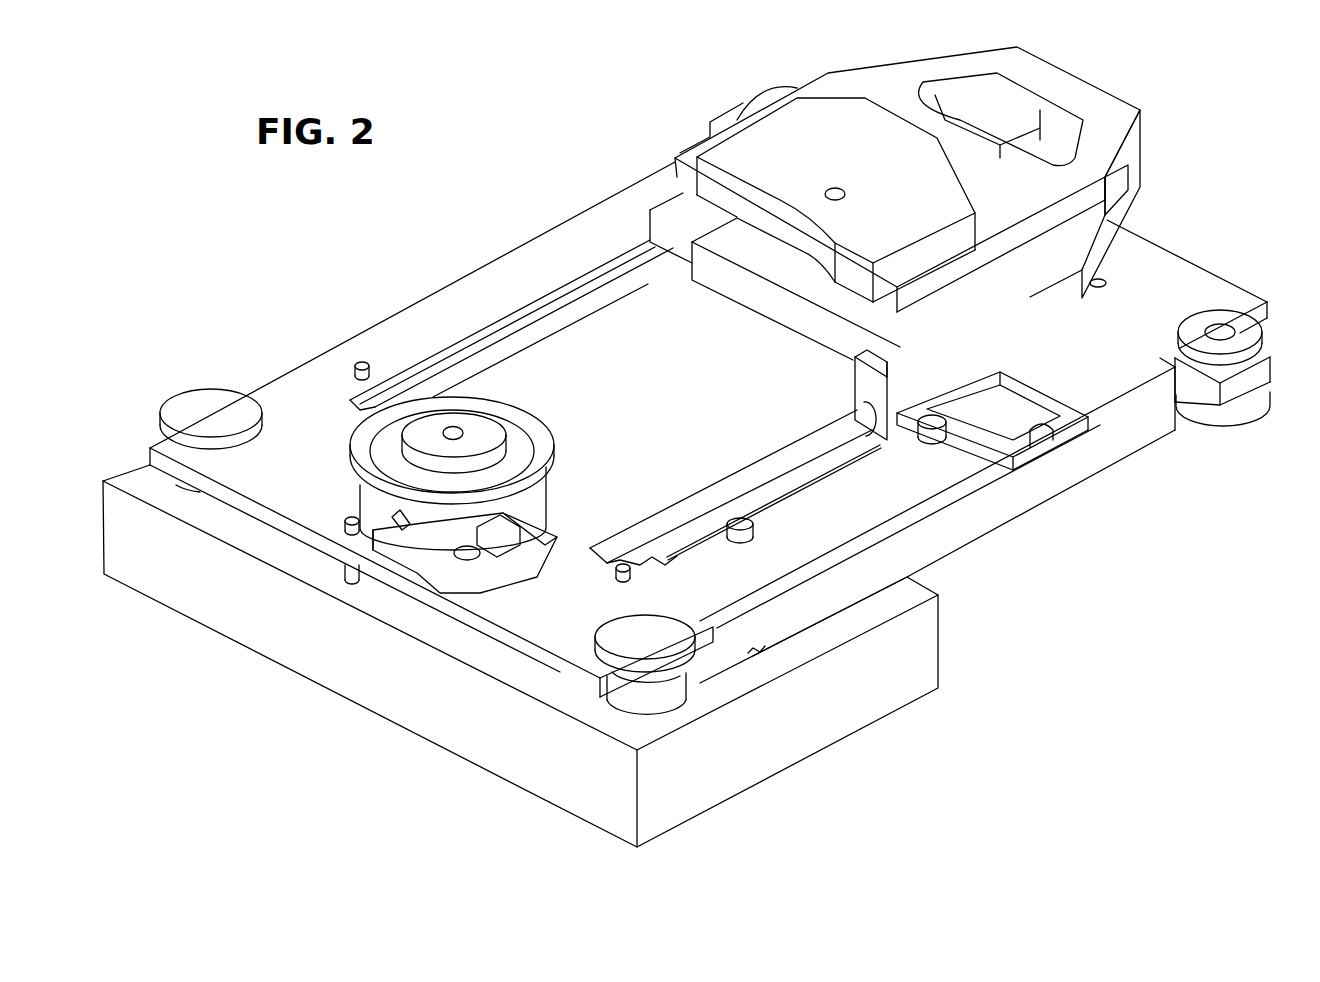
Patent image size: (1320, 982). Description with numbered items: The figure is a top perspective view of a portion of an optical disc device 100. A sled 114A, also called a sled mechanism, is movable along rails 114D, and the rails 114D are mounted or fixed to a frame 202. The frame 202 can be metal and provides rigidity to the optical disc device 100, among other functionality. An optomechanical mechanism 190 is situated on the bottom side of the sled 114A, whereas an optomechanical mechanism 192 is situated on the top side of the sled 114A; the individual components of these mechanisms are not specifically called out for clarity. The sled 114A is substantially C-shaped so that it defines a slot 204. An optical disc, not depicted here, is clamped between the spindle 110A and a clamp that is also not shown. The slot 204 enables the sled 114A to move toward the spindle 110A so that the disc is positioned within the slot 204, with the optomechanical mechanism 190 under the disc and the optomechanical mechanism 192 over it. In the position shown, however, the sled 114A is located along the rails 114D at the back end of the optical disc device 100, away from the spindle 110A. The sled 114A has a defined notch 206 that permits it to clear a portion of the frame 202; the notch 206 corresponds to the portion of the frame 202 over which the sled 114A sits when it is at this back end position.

The optical disc device 100 is at (280, 766).
The spindle 110A is at (543, 437).
The sled 114A is at (1110, 100).
The rails 114D is at (595, 307).
The optomechanical mechanism 190 is at (762, 305).
The optomechanical mechanism 192 is at (832, 135).
The frame 202 is at (982, 498).
The slot 204 is at (886, 355).
The notch 206 is at (1130, 247).